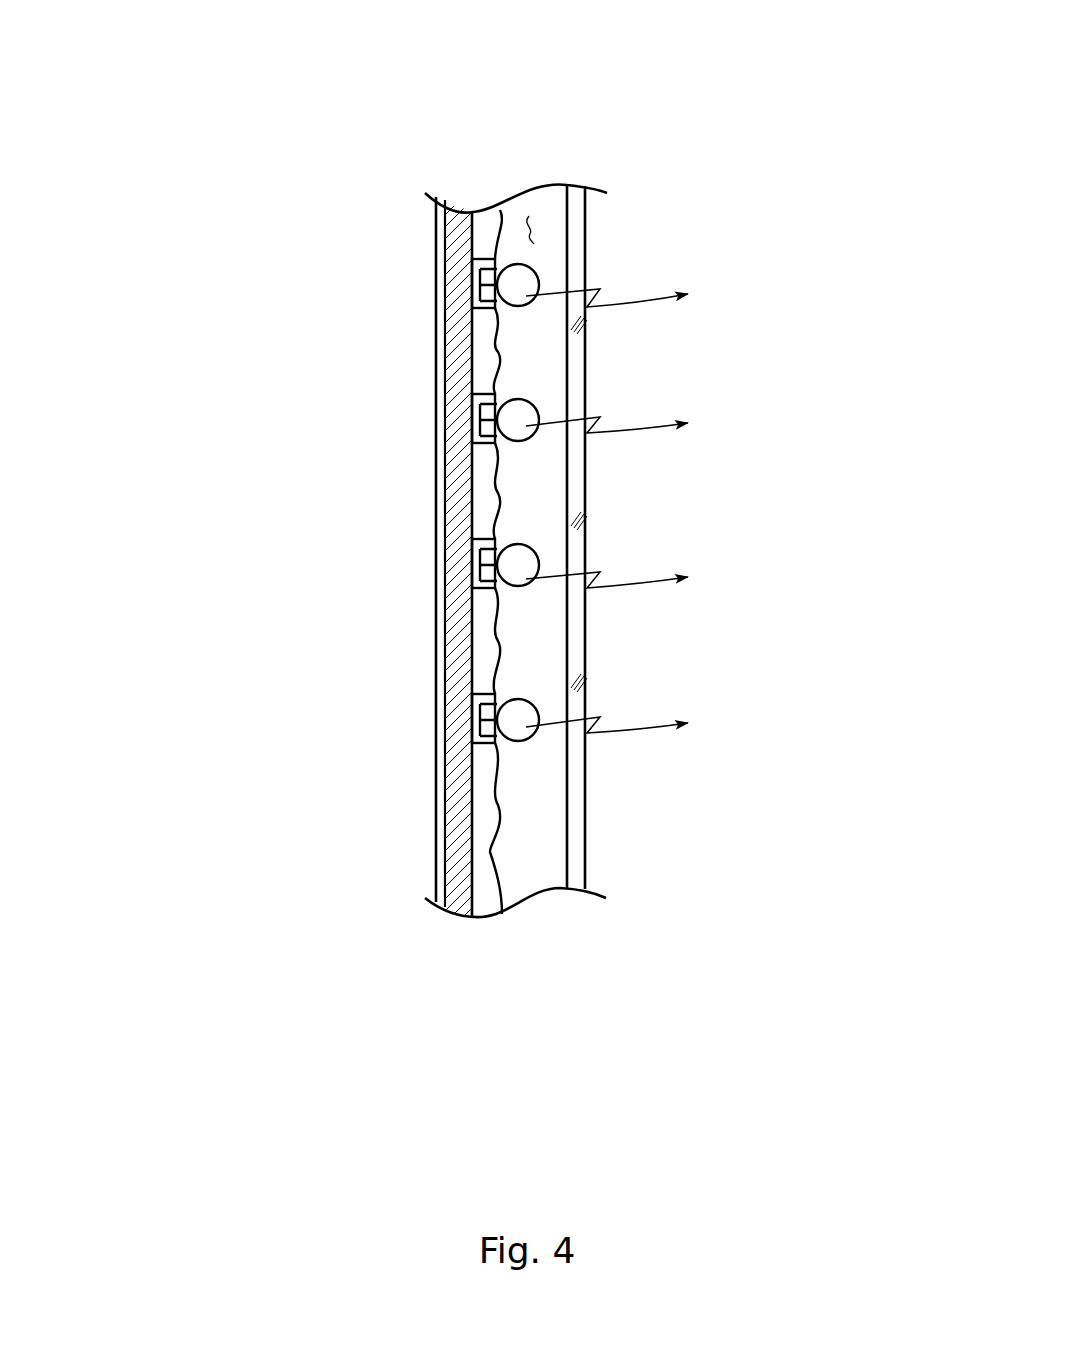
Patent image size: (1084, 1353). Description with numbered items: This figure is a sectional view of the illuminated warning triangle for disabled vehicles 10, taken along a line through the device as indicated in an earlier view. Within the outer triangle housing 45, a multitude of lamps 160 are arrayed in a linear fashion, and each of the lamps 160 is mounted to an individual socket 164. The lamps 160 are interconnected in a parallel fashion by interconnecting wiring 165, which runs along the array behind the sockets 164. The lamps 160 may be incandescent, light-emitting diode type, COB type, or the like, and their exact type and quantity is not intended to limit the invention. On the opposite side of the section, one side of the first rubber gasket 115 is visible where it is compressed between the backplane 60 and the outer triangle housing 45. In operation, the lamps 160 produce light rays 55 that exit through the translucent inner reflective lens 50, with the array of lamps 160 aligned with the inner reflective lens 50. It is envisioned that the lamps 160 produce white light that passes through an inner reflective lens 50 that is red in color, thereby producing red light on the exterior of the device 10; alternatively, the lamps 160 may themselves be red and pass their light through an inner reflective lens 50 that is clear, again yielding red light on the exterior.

The illuminated warning triangle for disabled vehicles 10 is at (178, 1054).
The outer triangle housing 45 is at (537, 224).
The inner reflective lens 50 is at (580, 230).
The light rays 55 is at (667, 298).
The backplane 60 is at (438, 270).
The first rubber gasket 115 is at (475, 208).
The lamps 160 is at (522, 281).
The socket 164 is at (472, 306).
The interconnecting wiring 165 is at (505, 224).